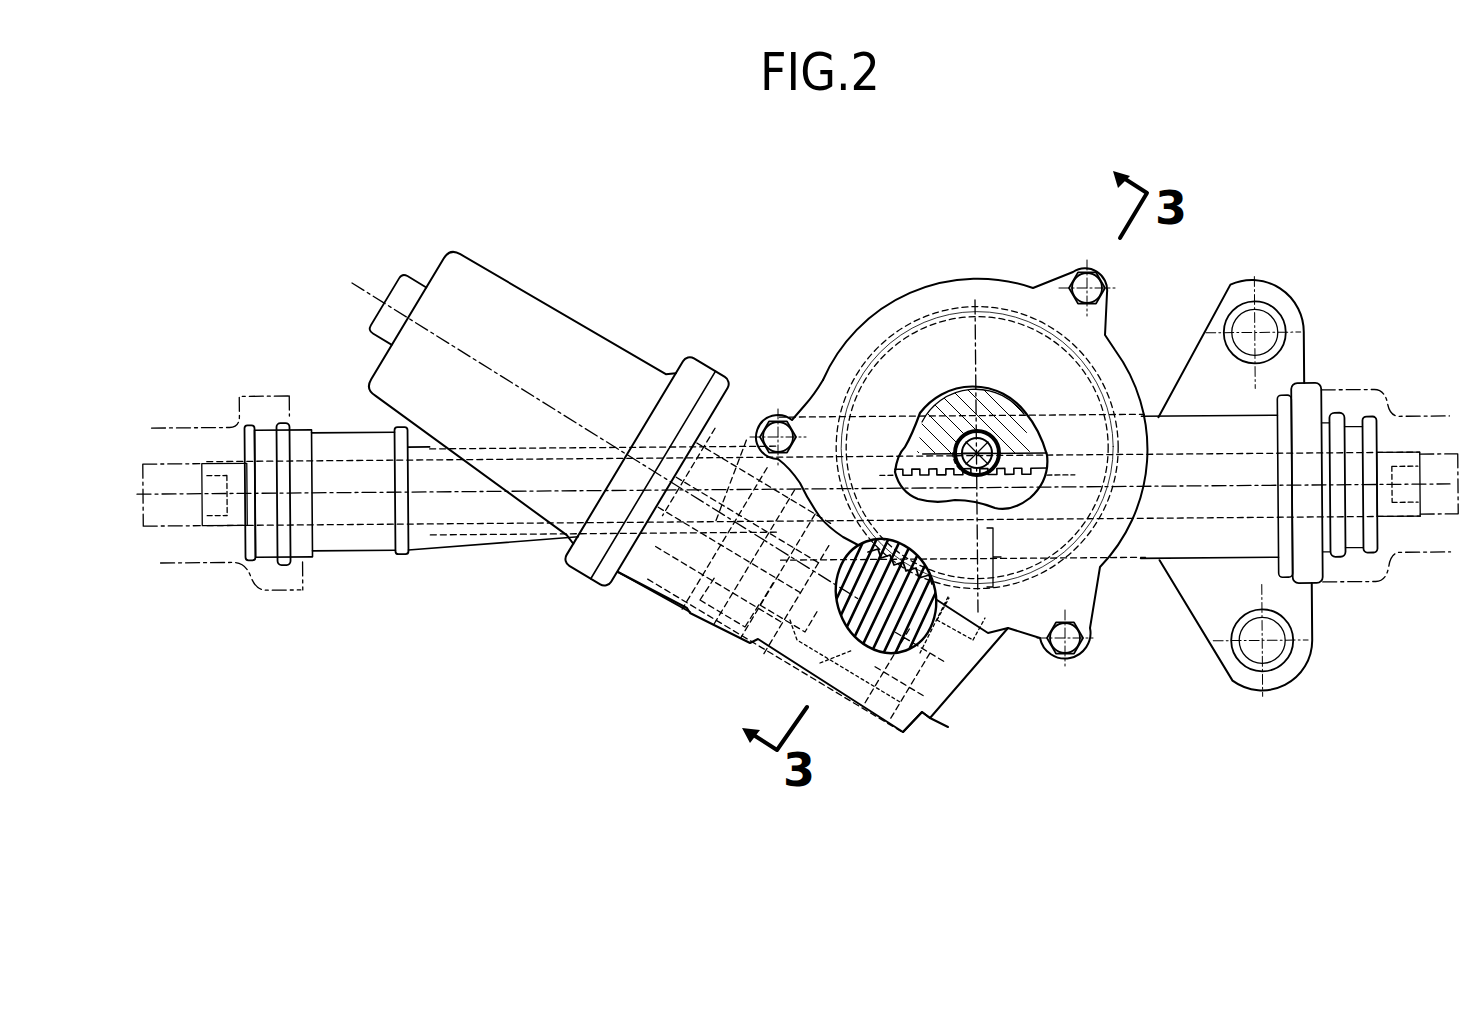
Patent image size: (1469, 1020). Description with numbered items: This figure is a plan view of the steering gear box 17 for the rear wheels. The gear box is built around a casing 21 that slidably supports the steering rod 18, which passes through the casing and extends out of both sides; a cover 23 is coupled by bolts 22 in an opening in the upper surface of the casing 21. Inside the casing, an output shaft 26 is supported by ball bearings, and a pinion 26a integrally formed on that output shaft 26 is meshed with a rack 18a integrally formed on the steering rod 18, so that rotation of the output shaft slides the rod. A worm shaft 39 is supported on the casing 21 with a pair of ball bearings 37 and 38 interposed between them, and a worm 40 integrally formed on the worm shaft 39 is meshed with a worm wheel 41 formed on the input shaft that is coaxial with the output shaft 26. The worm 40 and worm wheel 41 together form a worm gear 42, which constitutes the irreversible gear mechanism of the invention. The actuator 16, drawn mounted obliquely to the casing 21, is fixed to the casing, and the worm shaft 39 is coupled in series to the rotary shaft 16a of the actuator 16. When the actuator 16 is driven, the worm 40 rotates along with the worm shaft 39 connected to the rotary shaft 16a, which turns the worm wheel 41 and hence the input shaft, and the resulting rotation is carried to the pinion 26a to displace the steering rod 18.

The actuator 16 is at (579, 303).
The rotary shaft 16a is at (657, 587).
The steering gear box 17 is at (884, 268).
The steering rod 18 is at (1033, 455).
The rack 18a is at (921, 470).
The casing 21 is at (882, 730).
The bolts 22 is at (759, 418).
The cover 23 is at (993, 290).
The output shaft 26 is at (973, 428).
The pinion 26a is at (990, 425).
The ball bearing 37 is at (737, 630).
The ball bearing 38 is at (962, 720).
The worm shaft 39 is at (777, 623).
The worm 40 is at (927, 578).
The worm wheel 41 is at (905, 566).
The worm gear 42 is at (1012, 557).